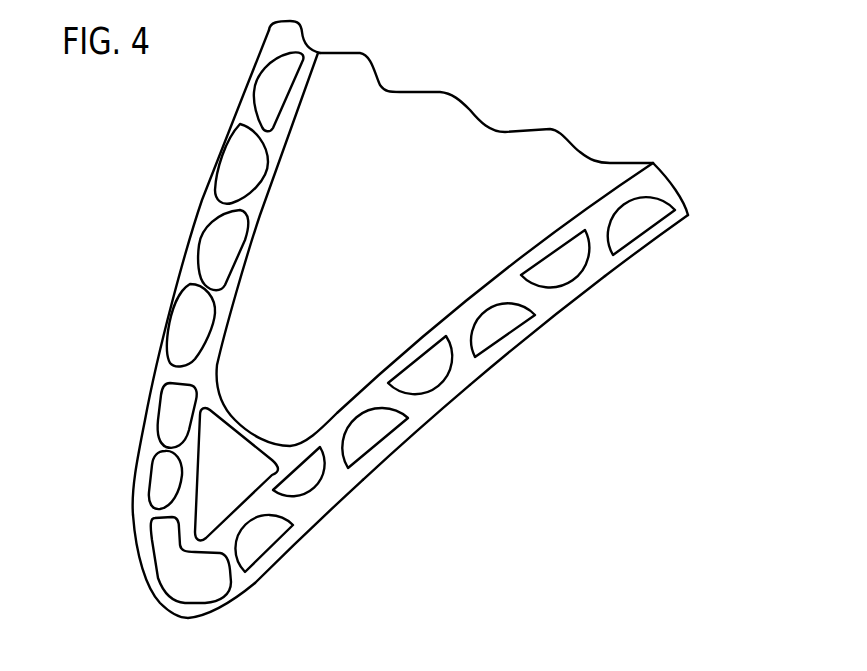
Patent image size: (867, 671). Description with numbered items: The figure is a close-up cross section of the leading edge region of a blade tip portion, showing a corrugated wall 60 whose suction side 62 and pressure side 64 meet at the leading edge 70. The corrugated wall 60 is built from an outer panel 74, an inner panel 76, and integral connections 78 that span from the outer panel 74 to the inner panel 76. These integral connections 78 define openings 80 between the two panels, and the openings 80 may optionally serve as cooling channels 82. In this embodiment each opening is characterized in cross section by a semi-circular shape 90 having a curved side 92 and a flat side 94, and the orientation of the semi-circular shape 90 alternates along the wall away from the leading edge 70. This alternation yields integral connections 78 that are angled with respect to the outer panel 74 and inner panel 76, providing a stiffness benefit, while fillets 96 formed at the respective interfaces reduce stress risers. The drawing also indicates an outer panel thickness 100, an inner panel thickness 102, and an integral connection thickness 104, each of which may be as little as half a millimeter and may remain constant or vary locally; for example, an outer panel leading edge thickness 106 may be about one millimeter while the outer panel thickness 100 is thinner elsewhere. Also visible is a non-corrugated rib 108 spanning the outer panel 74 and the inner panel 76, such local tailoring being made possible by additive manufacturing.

The corrugated wall 60 is at (238, 103).
The suction side 62 is at (203, 198).
The pressure side 64 is at (607, 276).
The leading edge 70 is at (175, 615).
The outer panel 74 is at (386, 458).
The inner panel 76 is at (347, 407).
The integral connections 78 is at (346, 495).
The openings 80 is at (525, 246).
The cooling channels 82 is at (561, 267).
The semi-circular shape 90 is at (673, 177).
The curved side 92 is at (612, 192).
The flat side 94 is at (647, 243).
The fillets 96 is at (413, 420).
The outer panel thickness 100 is at (505, 299).
The inner panel thickness 102 is at (491, 308).
The integral connection thickness 104 is at (476, 338).
The outer panel leading edge thickness 106 is at (118, 583).
The non-corrugated rib 108 is at (258, 426).